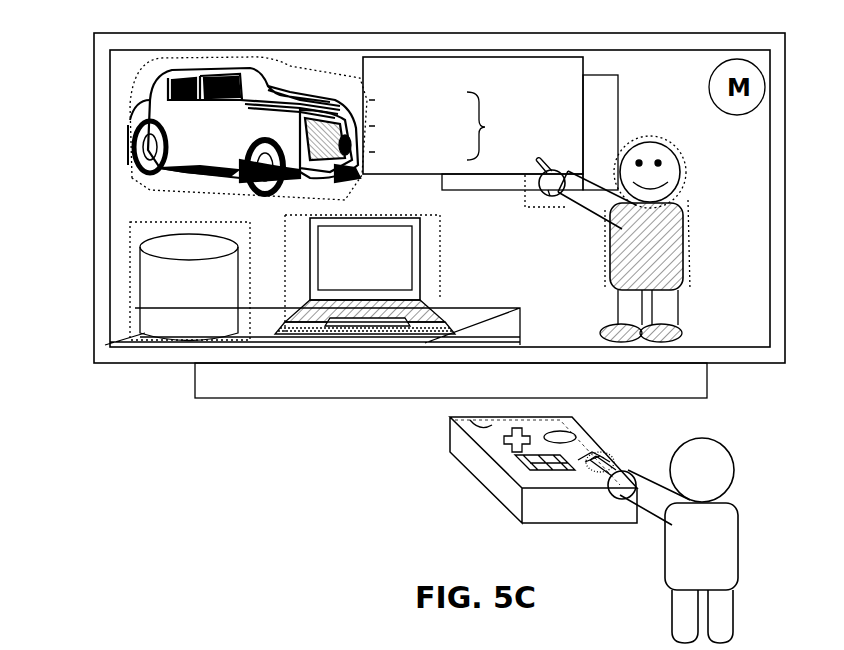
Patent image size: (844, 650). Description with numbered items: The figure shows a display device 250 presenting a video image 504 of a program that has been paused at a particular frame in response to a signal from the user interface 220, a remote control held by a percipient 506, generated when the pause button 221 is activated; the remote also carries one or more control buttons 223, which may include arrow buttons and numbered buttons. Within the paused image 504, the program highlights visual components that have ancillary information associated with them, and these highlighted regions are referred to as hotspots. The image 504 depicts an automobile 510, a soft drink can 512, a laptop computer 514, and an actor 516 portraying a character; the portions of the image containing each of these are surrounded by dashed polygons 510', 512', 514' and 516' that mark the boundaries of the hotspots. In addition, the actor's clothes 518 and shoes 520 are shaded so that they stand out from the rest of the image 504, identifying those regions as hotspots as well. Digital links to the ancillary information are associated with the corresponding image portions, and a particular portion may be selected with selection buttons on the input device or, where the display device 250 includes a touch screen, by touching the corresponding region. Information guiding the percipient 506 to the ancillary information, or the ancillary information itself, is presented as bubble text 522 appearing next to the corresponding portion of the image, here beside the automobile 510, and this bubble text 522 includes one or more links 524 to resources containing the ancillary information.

The display device 250 is at (128, 357).
The video image 504 is at (130, 183).
The automobile 510 is at (244, 129).
The dashed polygon 510' is at (197, 115).
The bubble text 522 is at (488, 57).
The links 524 is at (485, 127).
The soft drink can 512 is at (178, 272).
The dashed polygon 512' is at (214, 281).
The laptop computer 514 is at (386, 276).
The dashed polygon 514' is at (400, 275).
The actor 516 is at (676, 158).
The dashed polygon 516' is at (639, 213).
The clothes 518 is at (690, 225).
The shoes 520 is at (606, 330).
The user interface 220 is at (485, 476).
The control buttons 223 is at (450, 430).
The pause button 221 is at (600, 457).
The percipient 506 is at (736, 510).